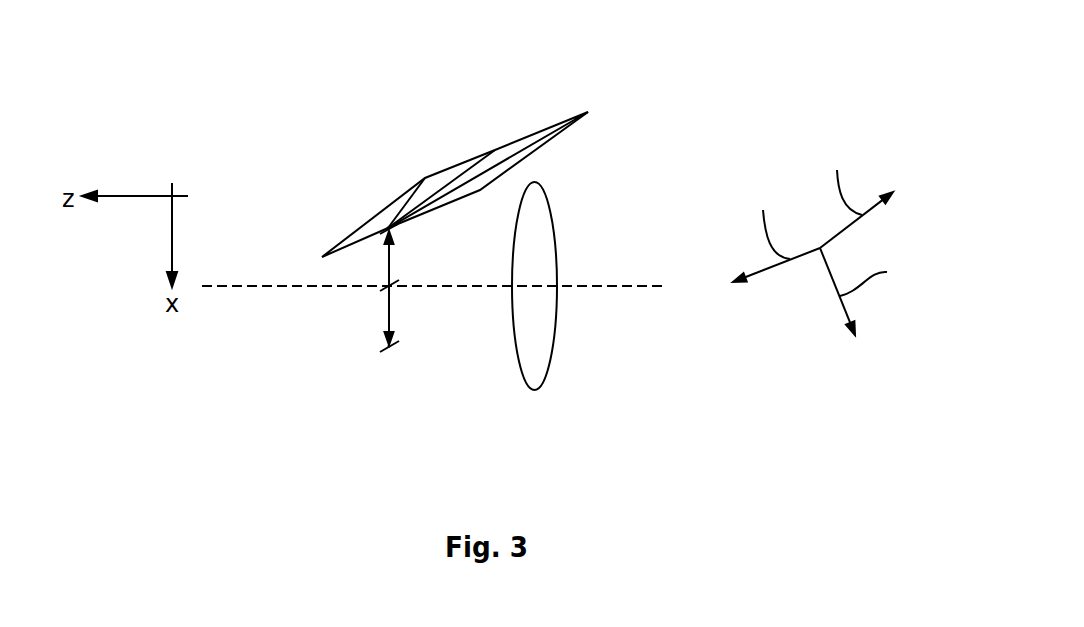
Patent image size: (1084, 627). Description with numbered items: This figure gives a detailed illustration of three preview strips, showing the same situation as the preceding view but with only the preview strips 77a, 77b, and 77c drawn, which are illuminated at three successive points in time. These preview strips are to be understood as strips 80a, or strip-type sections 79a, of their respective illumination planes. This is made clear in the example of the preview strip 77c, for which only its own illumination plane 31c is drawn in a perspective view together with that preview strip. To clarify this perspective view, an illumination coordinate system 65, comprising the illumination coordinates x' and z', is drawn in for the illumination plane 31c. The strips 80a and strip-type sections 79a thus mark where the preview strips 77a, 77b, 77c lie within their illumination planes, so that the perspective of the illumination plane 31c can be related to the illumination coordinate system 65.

The illumination plane 31c is at (563, 131).
The illumination coordinate system 65 is at (903, 171).
The preview strip 77a is at (391, 348).
The preview strip 77b is at (386, 288).
The preview strip 77c is at (389, 227).
The strip-type section 79a is at (389, 288).
The strip 80a is at (387, 226).